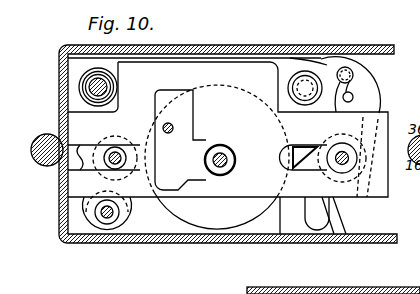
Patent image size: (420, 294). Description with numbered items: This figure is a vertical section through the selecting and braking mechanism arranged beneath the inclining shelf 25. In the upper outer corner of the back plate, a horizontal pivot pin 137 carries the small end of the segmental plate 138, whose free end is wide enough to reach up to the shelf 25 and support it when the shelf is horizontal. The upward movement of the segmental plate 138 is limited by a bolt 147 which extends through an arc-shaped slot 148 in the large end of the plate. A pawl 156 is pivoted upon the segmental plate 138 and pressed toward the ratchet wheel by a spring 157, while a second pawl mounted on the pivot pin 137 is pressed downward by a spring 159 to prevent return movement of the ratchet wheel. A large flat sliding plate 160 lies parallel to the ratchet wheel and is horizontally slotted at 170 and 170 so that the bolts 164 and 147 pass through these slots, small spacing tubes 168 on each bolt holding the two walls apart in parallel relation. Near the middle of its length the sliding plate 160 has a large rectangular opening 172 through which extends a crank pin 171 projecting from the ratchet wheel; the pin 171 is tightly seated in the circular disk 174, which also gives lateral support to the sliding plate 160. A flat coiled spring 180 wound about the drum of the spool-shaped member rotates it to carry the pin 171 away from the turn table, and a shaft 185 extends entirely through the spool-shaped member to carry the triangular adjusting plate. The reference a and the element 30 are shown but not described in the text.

The spring 159 is at (78, 46).
The shelf 25 is at (268, 45).
The horizontal pivot pin 137 is at (92, 85).
The pin 30 is at (45, 136).
The horizontal slot 170 is at (93, 137).
The bolt 164 is at (118, 150).
The spacing tube 168 is at (116, 162).
The rectangular opening 172 is at (170, 112).
The crank pin 171 is at (172, 126).
The shaft 185 is at (234, 165).
The sliding plate 160 is at (227, 192).
The circular disk 174 is at (200, 210).
The pawl 156 is at (320, 80).
The spring 157 is at (358, 86).
The segmental plate 138 is at (359, 73).
The flat coiled spring 180 is at (297, 145).
The bolt 147 is at (344, 151).
The arc-shaped slot 148 is at (350, 215).
The point a is at (260, 105).